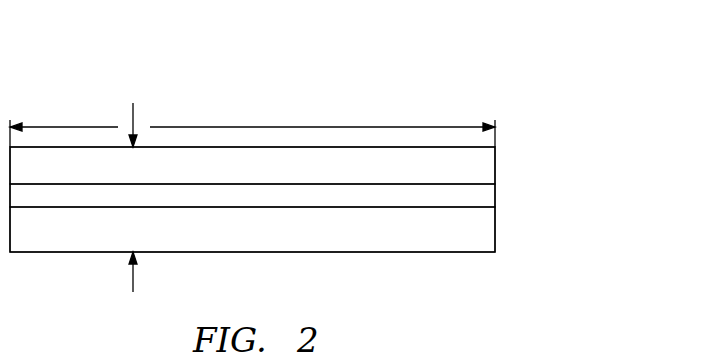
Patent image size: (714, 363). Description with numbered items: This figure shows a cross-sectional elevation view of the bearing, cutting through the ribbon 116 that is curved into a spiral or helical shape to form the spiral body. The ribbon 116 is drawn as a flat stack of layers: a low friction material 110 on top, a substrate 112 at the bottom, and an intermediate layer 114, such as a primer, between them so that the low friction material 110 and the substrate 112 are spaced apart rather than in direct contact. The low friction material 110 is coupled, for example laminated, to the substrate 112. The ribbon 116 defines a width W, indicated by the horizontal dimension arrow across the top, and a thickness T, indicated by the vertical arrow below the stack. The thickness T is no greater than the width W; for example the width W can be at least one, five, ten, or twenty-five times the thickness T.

The ribbon 116 is at (412, 72).
The low friction material 110 is at (495, 168).
The intermediate layer 114 is at (495, 200).
The substrate 112 is at (495, 233).
The width W is at (317, 127).
The thickness T is at (136, 278).